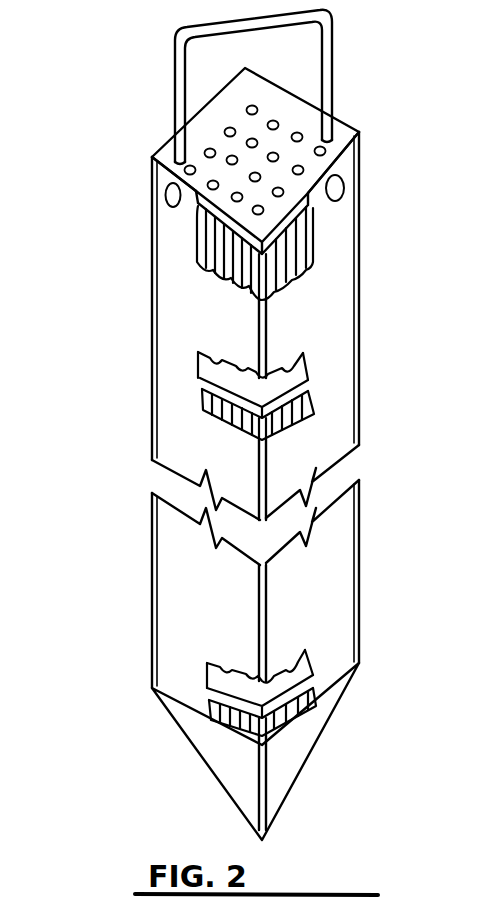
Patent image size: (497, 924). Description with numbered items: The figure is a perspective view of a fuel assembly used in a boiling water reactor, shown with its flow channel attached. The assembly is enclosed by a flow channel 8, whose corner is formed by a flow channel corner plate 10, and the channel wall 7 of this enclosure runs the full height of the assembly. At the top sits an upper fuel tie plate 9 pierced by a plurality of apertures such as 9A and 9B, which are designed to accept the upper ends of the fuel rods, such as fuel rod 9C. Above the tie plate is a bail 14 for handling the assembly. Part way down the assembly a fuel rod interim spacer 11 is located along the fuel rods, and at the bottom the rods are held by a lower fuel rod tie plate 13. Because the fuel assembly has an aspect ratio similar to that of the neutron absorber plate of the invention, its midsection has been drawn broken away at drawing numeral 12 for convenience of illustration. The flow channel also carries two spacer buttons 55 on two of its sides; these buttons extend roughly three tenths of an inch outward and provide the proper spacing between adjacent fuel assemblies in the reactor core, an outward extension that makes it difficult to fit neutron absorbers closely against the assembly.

The tubular body 7 is at (357, 358).
The flow channel 8 is at (340, 328).
The upper fuel tie plate 9 is at (222, 227).
The aperture 9A is at (355, 130).
The aperture 9B is at (158, 158).
The fuel rod 9C is at (308, 245).
The flow channel corner plate 10 is at (257, 76).
The fuel rod interim spacer 11 is at (213, 390).
The broken-away midsection 12 is at (347, 463).
The lower fuel rod tie plate 13 is at (292, 685).
The bail 14 is at (340, 42).
The spacer buttons 55 is at (170, 197).